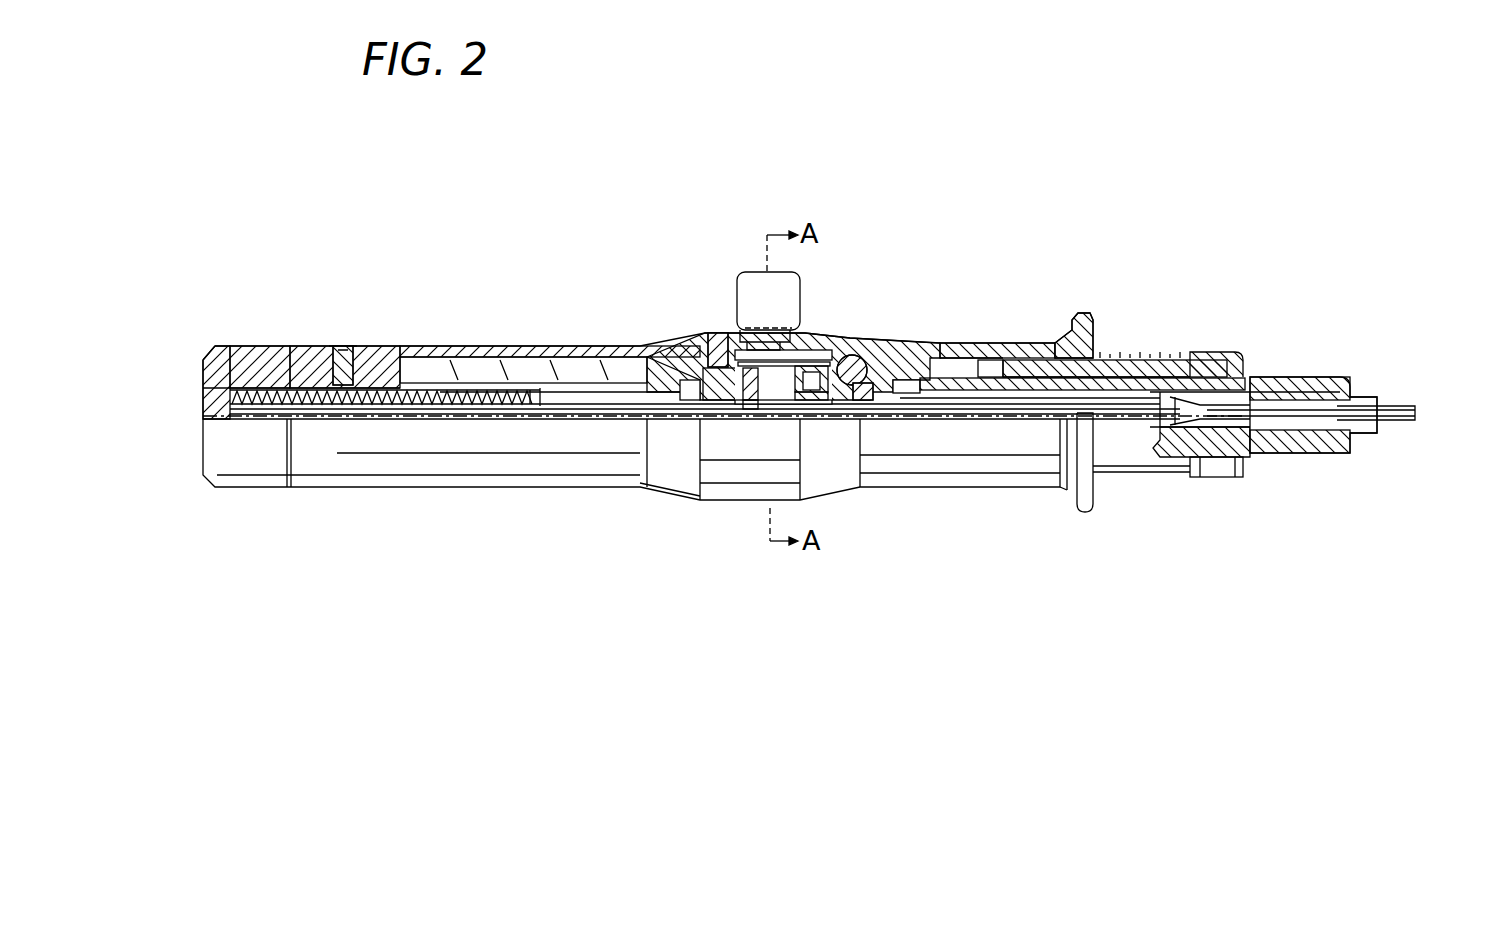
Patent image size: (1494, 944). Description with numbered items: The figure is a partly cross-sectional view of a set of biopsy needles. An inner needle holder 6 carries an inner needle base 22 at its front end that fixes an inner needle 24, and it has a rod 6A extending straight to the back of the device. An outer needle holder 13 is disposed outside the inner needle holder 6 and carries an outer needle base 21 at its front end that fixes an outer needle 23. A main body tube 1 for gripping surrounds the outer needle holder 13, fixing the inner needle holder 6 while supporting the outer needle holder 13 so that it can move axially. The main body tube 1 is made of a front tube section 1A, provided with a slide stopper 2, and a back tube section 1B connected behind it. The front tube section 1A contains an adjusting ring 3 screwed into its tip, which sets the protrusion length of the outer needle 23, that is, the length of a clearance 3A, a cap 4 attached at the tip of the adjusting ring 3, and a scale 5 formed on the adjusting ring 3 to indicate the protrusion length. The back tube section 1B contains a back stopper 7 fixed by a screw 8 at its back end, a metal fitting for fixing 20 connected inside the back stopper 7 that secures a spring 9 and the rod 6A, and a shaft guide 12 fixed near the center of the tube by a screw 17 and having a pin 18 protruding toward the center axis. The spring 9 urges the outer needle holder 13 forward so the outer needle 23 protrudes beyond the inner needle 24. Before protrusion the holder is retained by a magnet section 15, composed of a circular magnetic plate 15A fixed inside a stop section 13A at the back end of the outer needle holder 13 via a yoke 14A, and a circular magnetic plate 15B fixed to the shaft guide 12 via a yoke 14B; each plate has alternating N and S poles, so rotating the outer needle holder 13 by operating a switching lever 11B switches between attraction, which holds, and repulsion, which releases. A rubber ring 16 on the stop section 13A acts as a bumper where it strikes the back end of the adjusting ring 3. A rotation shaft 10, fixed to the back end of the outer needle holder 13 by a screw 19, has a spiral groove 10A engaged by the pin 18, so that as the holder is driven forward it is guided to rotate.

The main body tube 1 is at (497, 490).
The front tube section 1A is at (995, 355).
The back tube section 1B is at (537, 350).
The slide stopper 2 is at (1100, 515).
The adjusting ring 3 is at (1130, 345).
The clearance 3A is at (985, 350).
The cap 4 is at (1248, 357).
The scale 5 is at (1108, 340).
The inner needle holder 6 is at (1172, 362).
The rod 6A is at (1020, 420).
The back stopper 7 is at (243, 352).
The screw 8 is at (348, 345).
The spring 9 is at (447, 390).
The rotation shaft 10 is at (588, 385).
The spiral groove 10A is at (652, 345).
The switching lever 11B is at (793, 285).
The shaft guide 12 is at (717, 387).
The outer needle holder 13 is at (940, 367).
The stop section 13A is at (760, 345).
The yoke 14A is at (837, 403).
The yoke 14B is at (793, 368).
The magnet section 15 is at (768, 405).
The circular magnetic plate 15A is at (840, 368).
The circular magnetic plate 15B is at (813, 403).
The rubber ring 16 is at (862, 360).
The screw 17 is at (710, 335).
The pin 18 is at (753, 417).
The screw 19 is at (870, 403).
The metal fitting for fixing 20 is at (205, 350).
The outer needle base 21 is at (1352, 453).
The inner needle base 22 is at (1207, 470).
The outer needle 23 is at (1396, 405).
The inner needle 24 is at (1308, 400).